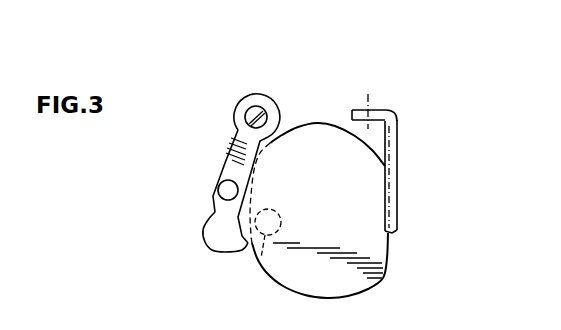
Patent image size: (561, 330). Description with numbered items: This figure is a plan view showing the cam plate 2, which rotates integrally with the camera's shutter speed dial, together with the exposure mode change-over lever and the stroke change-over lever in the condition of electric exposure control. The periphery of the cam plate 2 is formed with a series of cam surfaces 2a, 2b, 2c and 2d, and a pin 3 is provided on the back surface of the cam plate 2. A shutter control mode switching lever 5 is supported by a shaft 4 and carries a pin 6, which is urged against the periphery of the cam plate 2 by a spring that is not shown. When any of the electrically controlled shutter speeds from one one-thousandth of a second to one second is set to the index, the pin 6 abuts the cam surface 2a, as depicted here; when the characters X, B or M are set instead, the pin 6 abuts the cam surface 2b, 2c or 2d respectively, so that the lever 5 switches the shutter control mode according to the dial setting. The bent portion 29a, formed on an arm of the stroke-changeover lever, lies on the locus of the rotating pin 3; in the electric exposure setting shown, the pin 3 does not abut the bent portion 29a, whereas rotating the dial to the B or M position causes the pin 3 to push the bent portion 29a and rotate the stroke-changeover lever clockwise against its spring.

The cam plate 2 is at (327, 222).
The cam surface 2a is at (285, 289).
The cam surface 2b is at (386, 262).
The cam surface 2c is at (393, 233).
The cam surface 2d is at (383, 161).
The bent portion 29a is at (393, 125).
The pin 3 is at (258, 269).
The shaft 4 is at (253, 109).
The shutter control mode switching lever 5 is at (221, 239).
The pin 6 is at (223, 188).